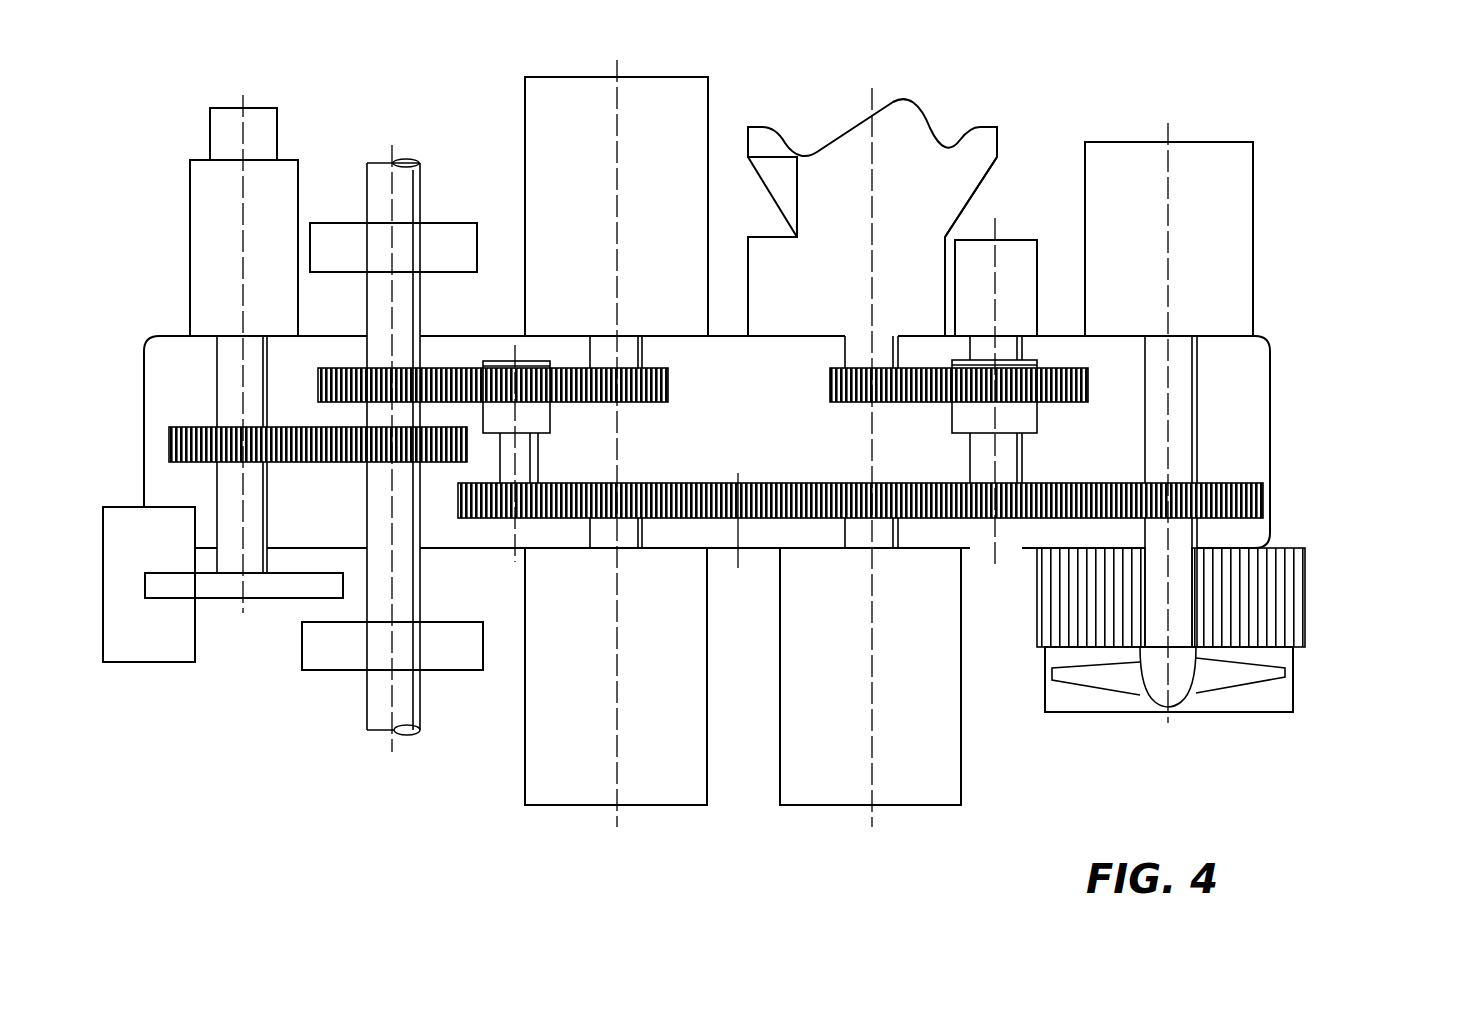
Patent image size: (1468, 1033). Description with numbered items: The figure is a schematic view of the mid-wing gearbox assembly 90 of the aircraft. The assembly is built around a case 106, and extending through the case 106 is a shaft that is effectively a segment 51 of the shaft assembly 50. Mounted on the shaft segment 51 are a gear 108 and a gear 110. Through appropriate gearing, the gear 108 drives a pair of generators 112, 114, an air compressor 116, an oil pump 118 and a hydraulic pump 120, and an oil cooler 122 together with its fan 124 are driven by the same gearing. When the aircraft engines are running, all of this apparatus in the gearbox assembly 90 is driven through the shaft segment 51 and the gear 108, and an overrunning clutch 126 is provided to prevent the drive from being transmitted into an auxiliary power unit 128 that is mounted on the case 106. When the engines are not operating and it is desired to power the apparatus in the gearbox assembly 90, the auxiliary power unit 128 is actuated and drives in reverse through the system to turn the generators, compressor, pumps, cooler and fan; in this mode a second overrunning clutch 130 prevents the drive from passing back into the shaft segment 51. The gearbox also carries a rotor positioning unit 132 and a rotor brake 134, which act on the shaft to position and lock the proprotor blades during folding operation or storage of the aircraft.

The mid-wing gearbox assembly 90 is at (1090, 97).
The shaft assembly 50 is at (427, 448).
The shaft segment 51 is at (410, 292).
The case 106 is at (141, 370).
The gear 108 is at (318, 390).
The gear 110 is at (349, 463).
The generator 112 is at (598, 263).
The generator 114 is at (597, 699).
The air compressor 116 is at (834, 767).
The oil pump 118 is at (1007, 238).
The hydraulic pump 120 is at (1149, 284).
The oil cooler 122 is at (1318, 598).
The fan 124 is at (1242, 697).
The overrunning clutch 126 is at (960, 415).
The auxiliary power unit 128 is at (852, 263).
The overrunning clutch 130 is at (543, 415).
The rotor positioning unit 132 is at (299, 162).
The rotor brake 134 is at (130, 650).